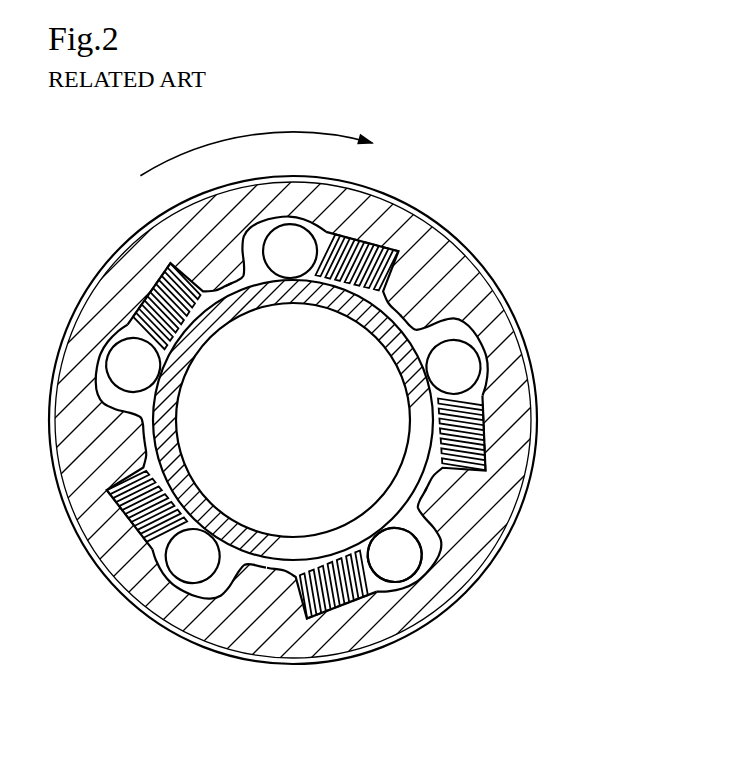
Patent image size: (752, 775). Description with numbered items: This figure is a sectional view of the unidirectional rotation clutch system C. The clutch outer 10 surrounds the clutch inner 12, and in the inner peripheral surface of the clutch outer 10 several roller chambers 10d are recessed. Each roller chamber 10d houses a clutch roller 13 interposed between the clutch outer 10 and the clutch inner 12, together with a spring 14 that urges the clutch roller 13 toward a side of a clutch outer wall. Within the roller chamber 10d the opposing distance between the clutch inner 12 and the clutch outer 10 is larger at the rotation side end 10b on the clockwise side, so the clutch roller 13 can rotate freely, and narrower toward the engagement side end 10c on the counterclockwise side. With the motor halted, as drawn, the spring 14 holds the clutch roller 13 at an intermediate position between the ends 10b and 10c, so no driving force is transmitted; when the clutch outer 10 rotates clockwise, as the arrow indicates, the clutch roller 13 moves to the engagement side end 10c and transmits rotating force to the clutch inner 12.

The clutch outer 10 is at (376, 387).
The rotation side end 10b is at (488, 391).
The engagement side end 10c is at (435, 322).
The roller chamber 10d is at (462, 325).
The clutch inner 12 is at (275, 550).
The clutch roller 13 is at (393, 560).
The spring 14 is at (347, 597).
The unidirectional rotation clutch system C is at (376, 387).